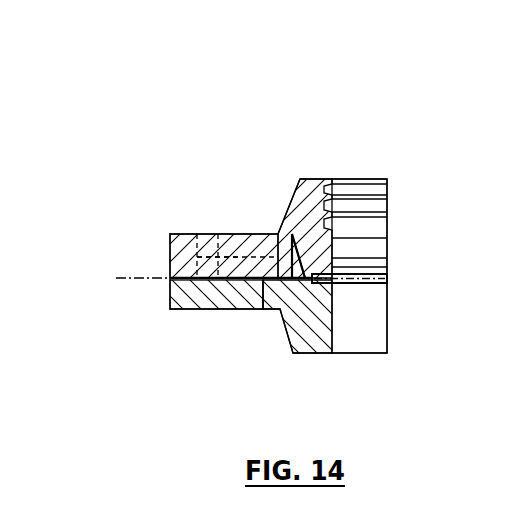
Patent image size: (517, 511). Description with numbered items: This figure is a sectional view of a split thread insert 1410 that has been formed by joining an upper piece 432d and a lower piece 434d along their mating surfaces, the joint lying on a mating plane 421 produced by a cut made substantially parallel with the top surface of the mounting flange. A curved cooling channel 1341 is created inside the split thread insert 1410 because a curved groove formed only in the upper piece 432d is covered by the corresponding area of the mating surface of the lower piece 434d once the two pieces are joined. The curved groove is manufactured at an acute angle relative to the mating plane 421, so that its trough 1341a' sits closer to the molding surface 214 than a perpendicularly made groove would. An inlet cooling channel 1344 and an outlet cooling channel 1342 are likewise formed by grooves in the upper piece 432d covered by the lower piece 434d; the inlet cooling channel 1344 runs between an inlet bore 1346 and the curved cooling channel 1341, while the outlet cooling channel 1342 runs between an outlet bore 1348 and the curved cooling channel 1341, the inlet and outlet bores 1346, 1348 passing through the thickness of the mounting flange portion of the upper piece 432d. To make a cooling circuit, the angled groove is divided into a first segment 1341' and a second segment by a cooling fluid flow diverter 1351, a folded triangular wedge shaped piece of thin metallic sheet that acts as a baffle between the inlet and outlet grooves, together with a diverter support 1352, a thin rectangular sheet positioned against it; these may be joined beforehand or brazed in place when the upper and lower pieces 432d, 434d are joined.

The split thread insert 1410 is at (136, 148).
The upper piece 432d is at (170, 250).
The lower piece 434d is at (170, 283).
The mating plane 421 is at (116, 278).
The outlet cooling channel 1342 is at (218, 257).
The inlet cooling channel 1344 is at (237, 184).
The inlet bore 1346 is at (197, 257).
The outlet bore 1348 is at (169, 212).
The segment of angled cooling channel groove 1341' is at (269, 208).
The trough of curved groove 1341a' is at (342, 204).
The curved cooling channel 1341 is at (374, 273).
The cooling fluid flow diverter 1351 is at (261, 308).
The diverter support 1352 is at (332, 246).
The molding surface 214 is at (369, 248).